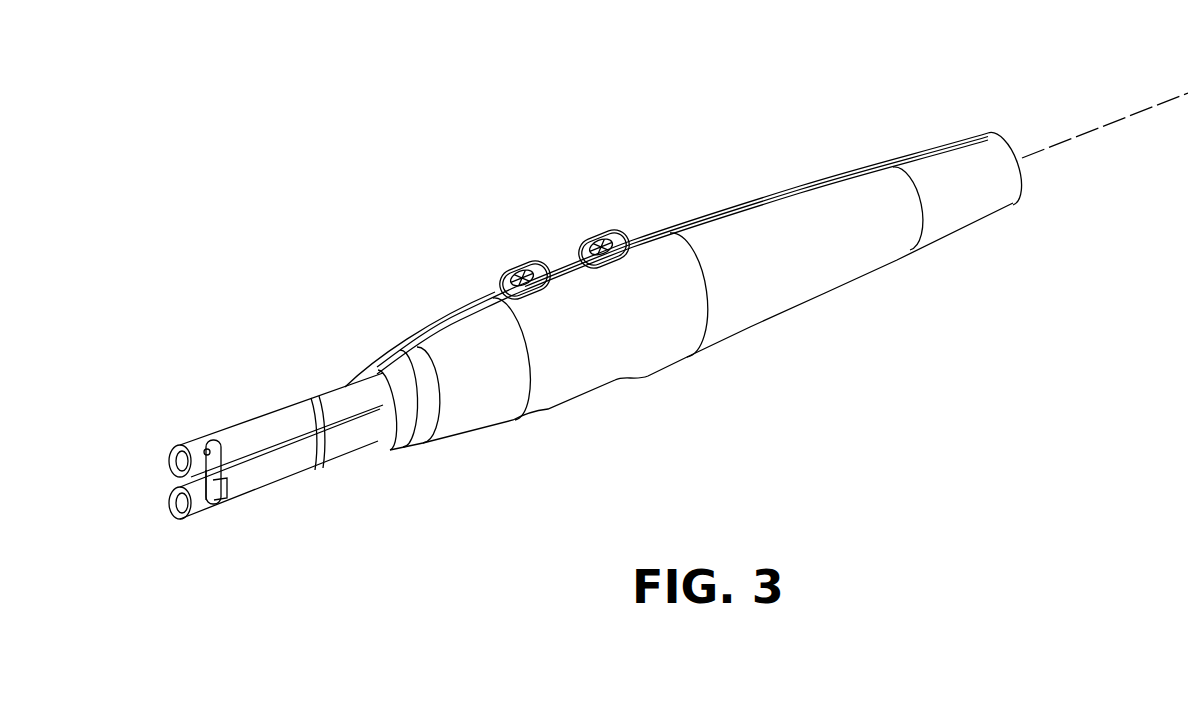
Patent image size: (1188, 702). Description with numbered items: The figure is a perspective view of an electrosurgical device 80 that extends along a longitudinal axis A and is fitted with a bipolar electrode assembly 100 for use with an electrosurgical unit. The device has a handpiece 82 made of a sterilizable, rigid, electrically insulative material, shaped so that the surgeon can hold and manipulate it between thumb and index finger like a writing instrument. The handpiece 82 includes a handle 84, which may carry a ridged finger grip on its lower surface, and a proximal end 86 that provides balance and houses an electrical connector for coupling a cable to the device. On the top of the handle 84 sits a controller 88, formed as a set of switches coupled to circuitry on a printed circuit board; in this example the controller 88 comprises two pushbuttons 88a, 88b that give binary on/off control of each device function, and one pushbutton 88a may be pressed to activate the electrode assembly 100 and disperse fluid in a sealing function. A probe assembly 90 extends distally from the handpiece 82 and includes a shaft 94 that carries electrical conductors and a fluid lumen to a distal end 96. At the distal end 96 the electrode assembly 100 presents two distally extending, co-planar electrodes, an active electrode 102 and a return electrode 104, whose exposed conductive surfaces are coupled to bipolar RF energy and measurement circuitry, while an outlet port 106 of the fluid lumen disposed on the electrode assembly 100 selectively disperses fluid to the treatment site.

The electrosurgical device 80 is at (926, 65).
The handpiece 82 is at (781, 369).
The handle 84 is at (852, 280).
The proximal end 86 is at (1008, 185).
The controller 88 is at (623, 182).
The pushbutton 88a is at (520, 267).
The pushbutton 88b is at (603, 236).
The probe assembly 90 is at (318, 501).
The shaft 94 is at (260, 417).
The distal end 96 is at (212, 508).
The bipolar electrode assembly 100 is at (169, 541).
The active electrode 102 is at (168, 458).
The return electrode 104 is at (168, 508).
The outlet port 106 is at (225, 500).
The longitudinal axis A is at (1117, 120).